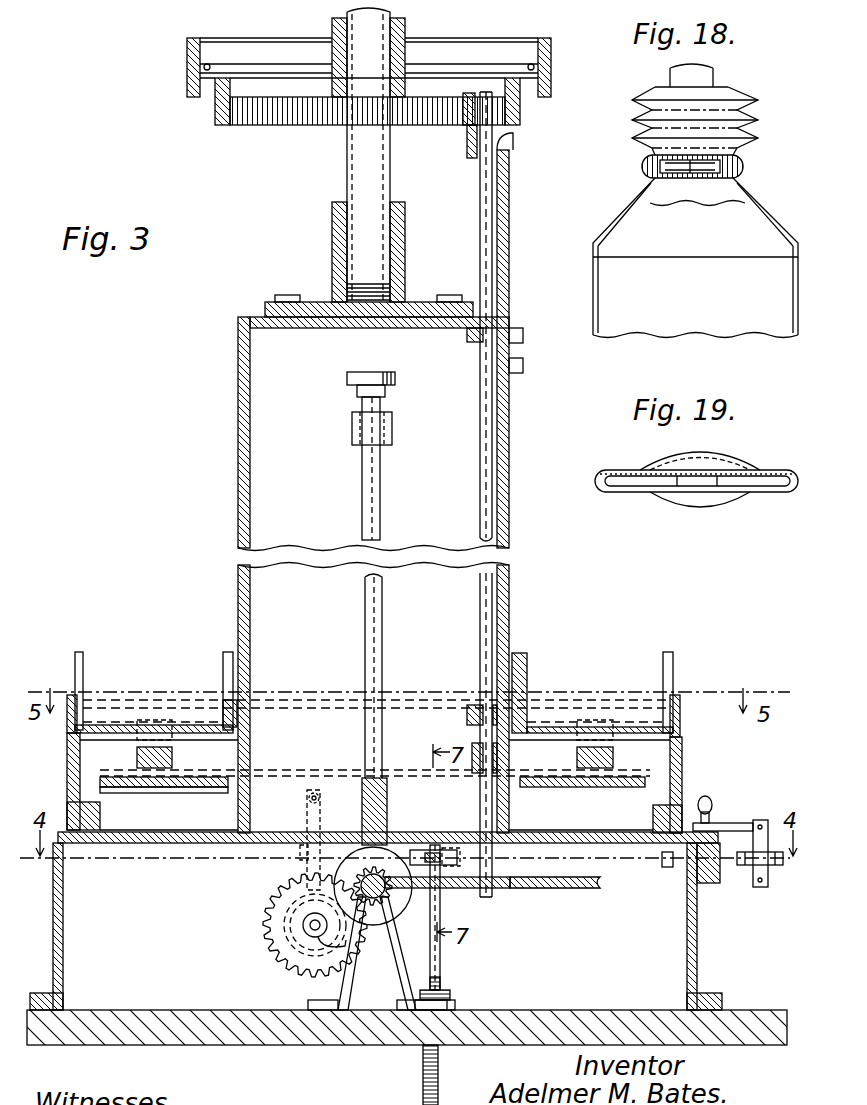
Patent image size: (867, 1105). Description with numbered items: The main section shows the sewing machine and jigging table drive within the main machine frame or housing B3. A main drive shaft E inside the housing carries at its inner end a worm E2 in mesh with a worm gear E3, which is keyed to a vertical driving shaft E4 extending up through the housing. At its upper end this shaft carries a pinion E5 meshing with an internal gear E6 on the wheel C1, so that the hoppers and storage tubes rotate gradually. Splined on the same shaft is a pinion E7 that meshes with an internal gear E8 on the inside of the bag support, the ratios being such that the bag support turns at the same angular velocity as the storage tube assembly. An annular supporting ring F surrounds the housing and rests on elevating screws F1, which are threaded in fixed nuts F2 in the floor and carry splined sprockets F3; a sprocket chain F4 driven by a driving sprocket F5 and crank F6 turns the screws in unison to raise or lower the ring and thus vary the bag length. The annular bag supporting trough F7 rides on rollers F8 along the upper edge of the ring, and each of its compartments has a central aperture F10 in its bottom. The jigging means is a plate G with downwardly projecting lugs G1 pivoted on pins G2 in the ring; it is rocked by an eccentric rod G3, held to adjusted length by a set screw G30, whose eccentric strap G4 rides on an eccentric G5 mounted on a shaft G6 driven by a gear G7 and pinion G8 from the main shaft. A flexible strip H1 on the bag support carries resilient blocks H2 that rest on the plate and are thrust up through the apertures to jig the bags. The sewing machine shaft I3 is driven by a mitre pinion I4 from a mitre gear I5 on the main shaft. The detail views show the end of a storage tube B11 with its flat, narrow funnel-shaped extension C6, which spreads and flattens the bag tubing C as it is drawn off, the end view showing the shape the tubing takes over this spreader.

In FIG. 3, the wheel C1 is at (250, 50).
In FIG. 3, the internal gear E6 is at (281, 126).
In FIG. 3, the pinion E5 is at (462, 118).
In FIG. 3, the vertical driving shaft E4 is at (480, 258).
In FIG. 3, the main machine frame or housing B3 is at (238, 432).
In FIG. 3, the shaft I3 is at (365, 612).
In FIG. 3, the downwardly projecting lugs G1 is at (394, 811).
In FIG. 3, the internal gear E8 is at (243, 718).
In FIG. 3, the pinion E7 is at (468, 713).
In FIG. 3, the annular bag supporting trough F7 is at (672, 685).
In FIG. 3, the rollers F8 is at (680, 700).
In FIG. 3, the annular supporting ring F is at (682, 780).
In FIG. 3, the aperture F10 is at (133, 733).
In FIG. 3, the flexible strip H1 is at (153, 745).
In FIG. 3, the resilient blocks H2 is at (172, 762).
In FIG. 3, the jigging plate G is at (144, 790).
In FIG. 3, the main drive shaft E is at (379, 898).
In FIG. 3, the worm gear E3 is at (591, 891).
In FIG. 3, the pinion G8 is at (355, 868).
In FIG. 3, the worm E2 is at (361, 900).
In FIG. 3, the gear G7 is at (265, 938).
In FIG. 3, the set screw G30 is at (292, 900).
In FIG. 3, the eccentric strap G4 is at (272, 946).
In FIG. 3, the eccentric G5 is at (296, 960).
In FIG. 3, the shaft G6 is at (316, 932).
In FIG. 3, the pins G2 is at (329, 840).
In FIG. 3, the eccentric rod G3 is at (302, 855).
In FIG. 3, the mitre gear I5 is at (441, 905).
In FIG. 3, the mitre pinion I4 is at (387, 840).
In FIG. 3, the sprockets F3 is at (459, 853).
In FIG. 3, the sprocket chain F4 is at (639, 858).
In FIG. 3, the fixed nuts F2 is at (451, 994).
In FIG. 3, the crank F6 is at (736, 823).
In FIG. 3, the driving sprocket F5 is at (771, 866).
In FIG. 3, the elevating screws F1 is at (423, 1068).
In FIG. 18, the storage tube B11 is at (675, 82).
In FIG. 19, the storage tube B11 is at (697, 506).
In FIG. 18, the funnel-shaped extension C6 is at (648, 215).
In FIG. 19, the funnel-shaped extension C6 is at (770, 486).
In FIG. 18, the bag tubing C is at (752, 118).
In FIG. 19, the bag tubing C is at (622, 493).